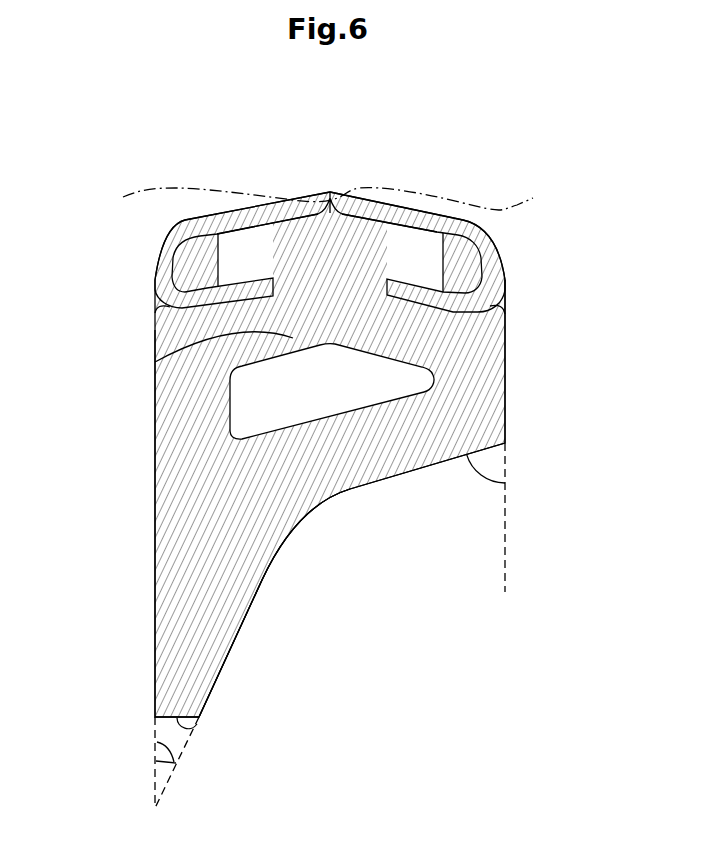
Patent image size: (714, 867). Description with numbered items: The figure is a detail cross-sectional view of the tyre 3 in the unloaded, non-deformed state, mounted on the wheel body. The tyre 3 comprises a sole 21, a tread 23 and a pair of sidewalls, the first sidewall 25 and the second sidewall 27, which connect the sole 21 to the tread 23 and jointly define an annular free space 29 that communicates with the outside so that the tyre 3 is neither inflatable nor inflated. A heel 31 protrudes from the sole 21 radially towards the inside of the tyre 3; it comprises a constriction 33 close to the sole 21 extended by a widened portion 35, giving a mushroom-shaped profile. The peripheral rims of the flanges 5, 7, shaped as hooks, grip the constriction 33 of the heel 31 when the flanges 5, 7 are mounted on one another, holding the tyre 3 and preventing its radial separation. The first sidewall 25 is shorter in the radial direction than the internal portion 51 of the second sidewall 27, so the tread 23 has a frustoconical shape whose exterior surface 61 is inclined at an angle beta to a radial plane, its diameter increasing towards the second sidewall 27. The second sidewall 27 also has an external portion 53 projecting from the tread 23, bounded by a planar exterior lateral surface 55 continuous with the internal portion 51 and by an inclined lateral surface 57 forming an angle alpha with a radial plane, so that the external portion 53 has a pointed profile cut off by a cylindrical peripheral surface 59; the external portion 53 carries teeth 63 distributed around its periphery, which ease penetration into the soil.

The tyre 3 is at (112, 483).
The flange 5 is at (158, 237).
The flange 7 is at (508, 222).
The sole 21 is at (185, 351).
The tread 23 is at (363, 447).
The first sidewall 25 is at (490, 370).
The second sidewall 27 is at (173, 509).
The free space 29 is at (305, 398).
The heel 31 is at (308, 240).
The constriction 33 is at (328, 282).
The widened portion 35 is at (244, 245).
The internal portion 51 is at (178, 412).
The external portion 53 is at (190, 640).
The lateral surface 55 is at (155, 573).
The lateral surface 57 is at (245, 618).
The peripheral surface 59 is at (190, 735).
The exterior surface 61 is at (435, 460).
The teeth 63 is at (218, 676).